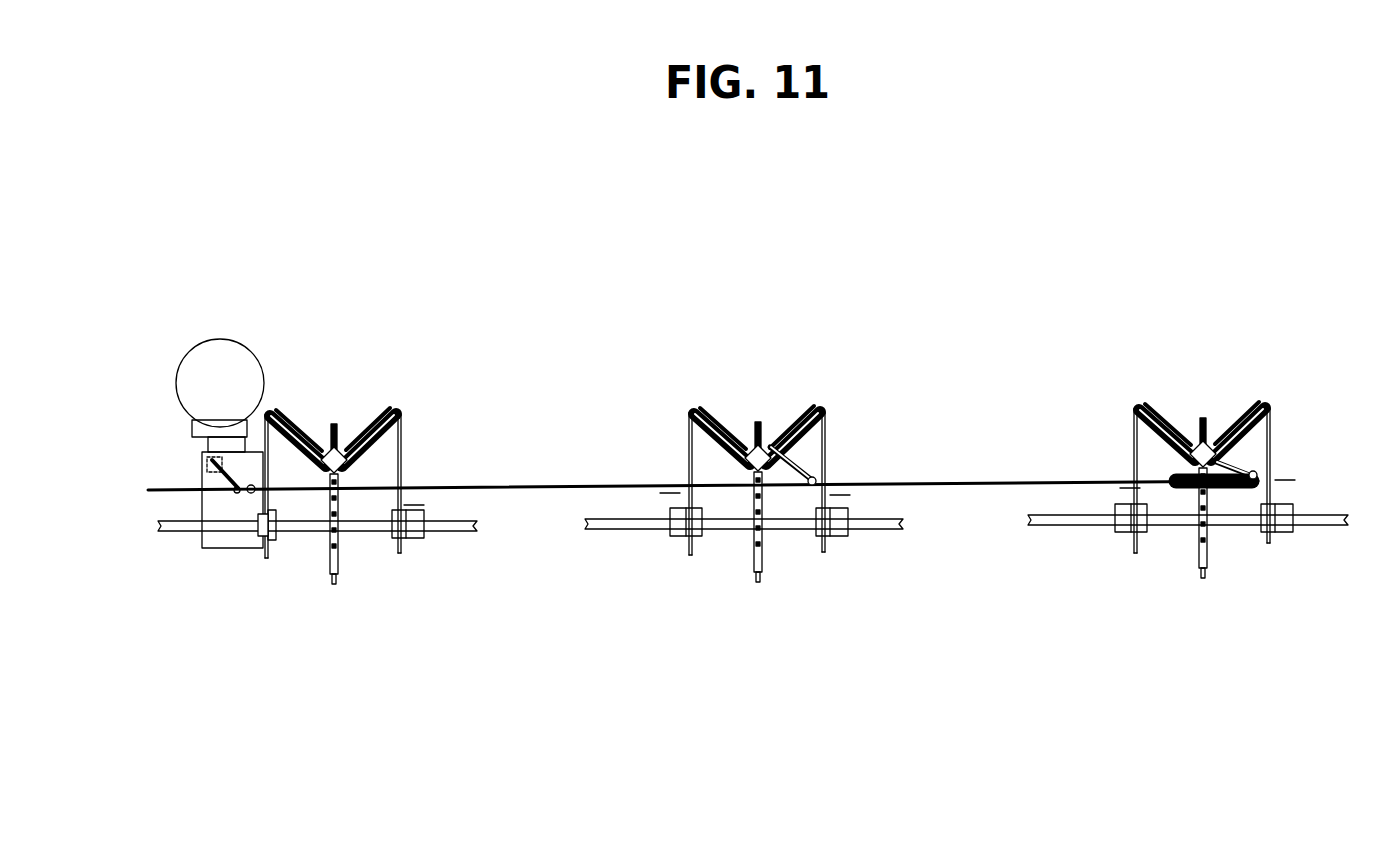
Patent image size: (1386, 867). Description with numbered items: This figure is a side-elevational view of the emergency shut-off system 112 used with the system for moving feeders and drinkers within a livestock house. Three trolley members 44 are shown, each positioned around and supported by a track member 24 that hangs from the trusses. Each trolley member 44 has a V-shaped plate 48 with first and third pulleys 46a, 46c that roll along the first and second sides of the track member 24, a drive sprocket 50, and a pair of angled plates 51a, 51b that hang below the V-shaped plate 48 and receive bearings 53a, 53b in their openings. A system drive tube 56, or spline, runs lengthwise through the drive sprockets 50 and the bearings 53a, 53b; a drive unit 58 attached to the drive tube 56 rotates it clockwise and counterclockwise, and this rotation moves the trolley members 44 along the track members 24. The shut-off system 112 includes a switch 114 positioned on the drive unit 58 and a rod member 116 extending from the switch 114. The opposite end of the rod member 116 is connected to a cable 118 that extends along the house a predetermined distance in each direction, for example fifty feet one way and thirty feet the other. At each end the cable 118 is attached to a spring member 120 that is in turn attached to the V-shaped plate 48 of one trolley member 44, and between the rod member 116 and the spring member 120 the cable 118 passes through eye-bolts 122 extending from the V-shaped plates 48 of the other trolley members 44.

The track member 24 is at (333, 425).
The first trolley member 44 is at (404, 425).
The first pulley 46a is at (287, 417).
The third pulley 46c is at (356, 436).
The V-shaped plate 48 is at (402, 448).
The drive sprocket 50 is at (337, 582).
The angled plate 51a is at (257, 530).
The angled plate 51b is at (405, 505).
The bearing 53a is at (275, 543).
The bearing 53b is at (407, 538).
The system drive tube 56 is at (367, 527).
The drive unit 58 is at (217, 505).
The emergency shut-off system 112 is at (997, 338).
The switch 114 is at (200, 452).
The rod member 116 is at (250, 470).
The cable 118 is at (537, 492).
The spring member 120 is at (1228, 492).
The eye-bolt 122 is at (813, 473).